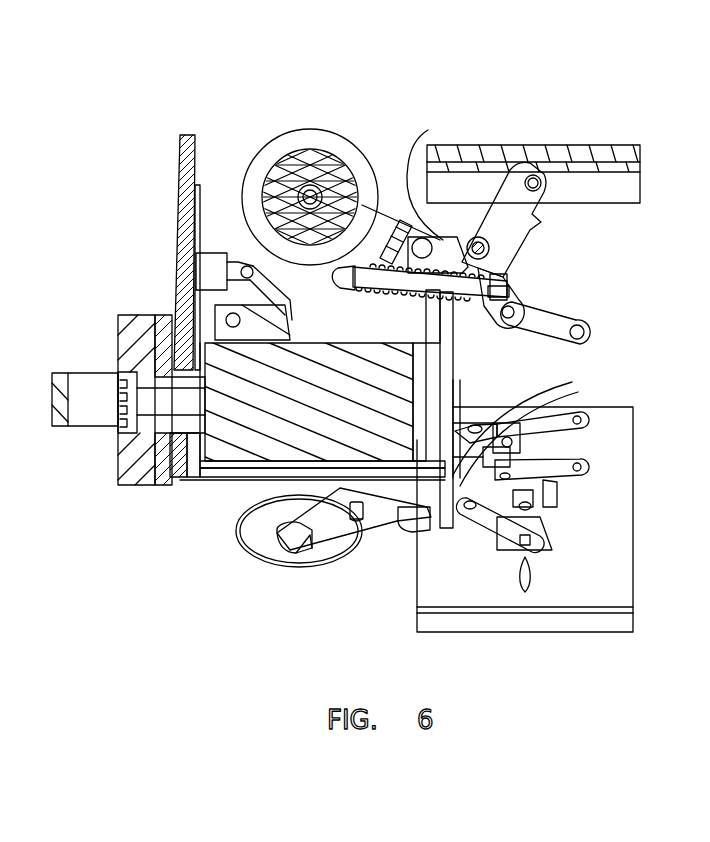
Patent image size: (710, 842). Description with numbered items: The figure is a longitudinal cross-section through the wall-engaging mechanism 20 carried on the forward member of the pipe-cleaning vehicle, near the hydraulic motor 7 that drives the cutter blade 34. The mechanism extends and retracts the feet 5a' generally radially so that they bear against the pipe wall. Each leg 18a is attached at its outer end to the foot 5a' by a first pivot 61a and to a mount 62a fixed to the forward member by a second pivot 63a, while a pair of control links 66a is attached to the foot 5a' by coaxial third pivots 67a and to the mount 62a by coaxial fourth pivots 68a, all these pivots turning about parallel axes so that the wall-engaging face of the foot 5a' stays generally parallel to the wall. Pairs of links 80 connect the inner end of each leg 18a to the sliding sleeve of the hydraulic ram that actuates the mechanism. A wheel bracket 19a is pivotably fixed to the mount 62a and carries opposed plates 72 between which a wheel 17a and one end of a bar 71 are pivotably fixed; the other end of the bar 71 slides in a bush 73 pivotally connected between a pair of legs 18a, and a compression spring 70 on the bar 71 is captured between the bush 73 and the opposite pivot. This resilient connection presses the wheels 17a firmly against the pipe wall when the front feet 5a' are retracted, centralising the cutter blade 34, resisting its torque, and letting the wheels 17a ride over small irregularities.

The hydraulic motor 7 is at (243, 442).
The cutter blade 34 is at (60, 373).
The wheels 17a is at (283, 137).
The wheel bracket 19a is at (392, 208).
The wall-engaging mechanism 20 is at (630, 264).
The feet 5a' is at (551, 365).
The first pivot 61a is at (535, 178).
The mount 62a is at (443, 240).
The second pivot 63a is at (487, 240).
The control links 66a is at (532, 233).
The third pivots 67a is at (540, 216).
The fourth pivots 68a is at (478, 428).
The compression spring 70 is at (397, 292).
The bar 71 is at (460, 290).
The opposed plates 72 is at (348, 272).
The bush 73 is at (515, 282).
The links 80 is at (575, 318).
The legs 18a is at (500, 255).